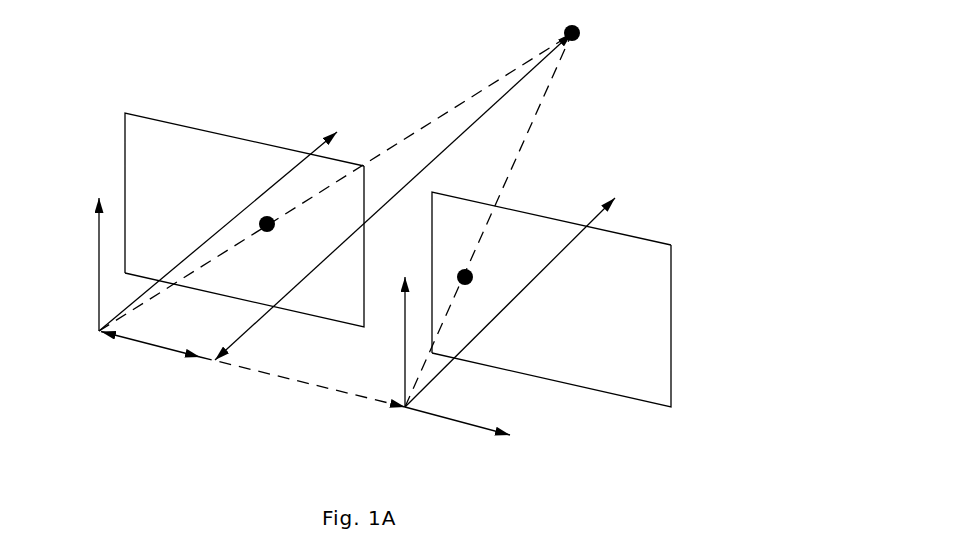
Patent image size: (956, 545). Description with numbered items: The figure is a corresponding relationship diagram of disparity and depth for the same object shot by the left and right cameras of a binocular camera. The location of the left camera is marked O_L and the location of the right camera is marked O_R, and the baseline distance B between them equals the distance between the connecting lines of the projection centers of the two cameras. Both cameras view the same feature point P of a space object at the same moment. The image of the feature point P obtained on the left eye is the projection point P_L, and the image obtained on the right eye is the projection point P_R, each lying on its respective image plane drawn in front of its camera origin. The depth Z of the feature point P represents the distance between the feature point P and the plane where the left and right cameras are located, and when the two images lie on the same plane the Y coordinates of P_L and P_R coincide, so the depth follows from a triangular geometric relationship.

The feature point P is at (350, 214).
The projection point on the left camera PL is at (282, 233).
The projection point on the right camera PR is at (482, 286).
The location of the left camera OL is at (199, 244).
The location of the right camera OR is at (509, 321).
The baseline distance B is at (302, 382).
The depth Z is at (393, 196).